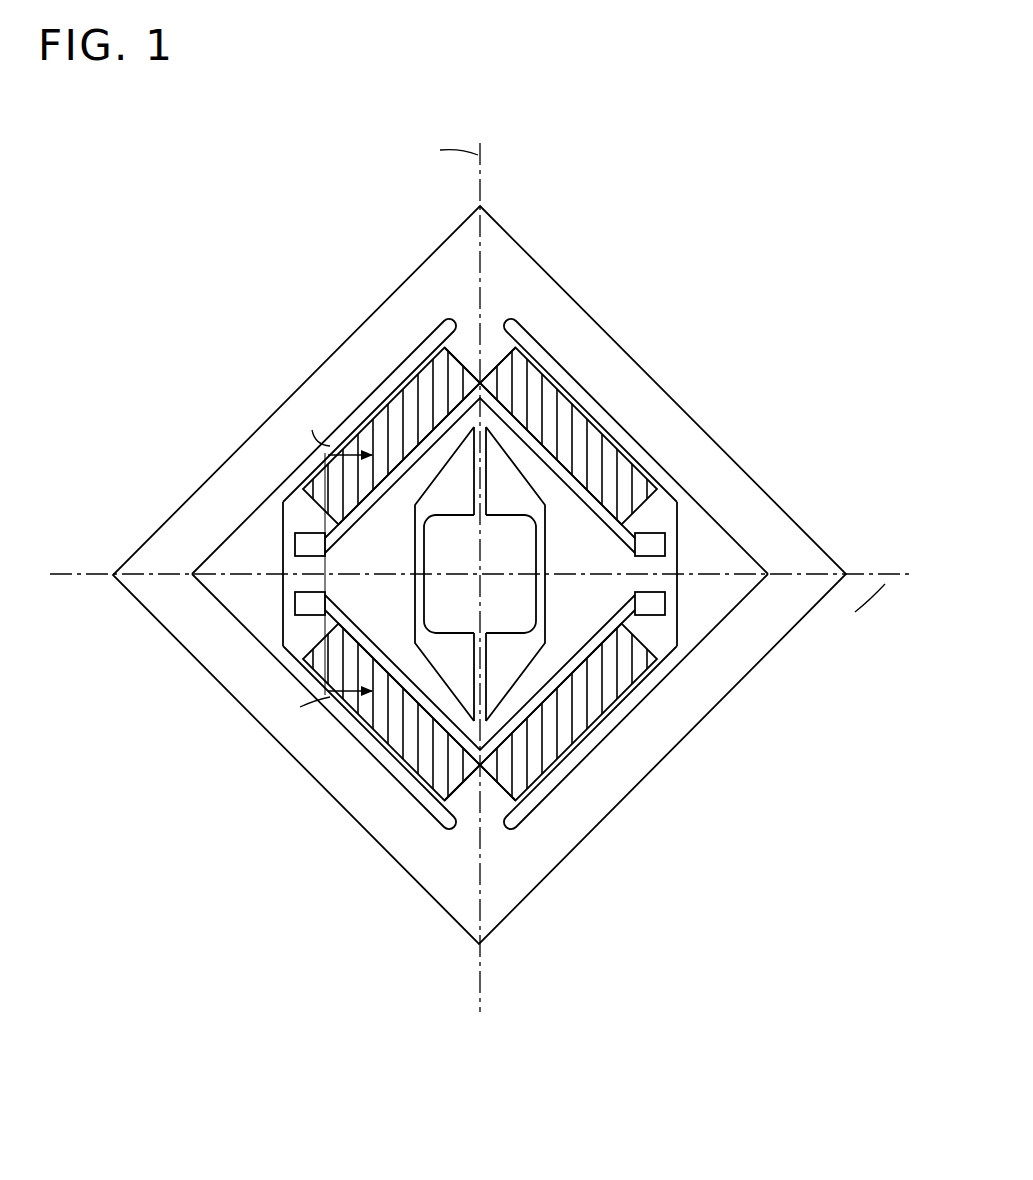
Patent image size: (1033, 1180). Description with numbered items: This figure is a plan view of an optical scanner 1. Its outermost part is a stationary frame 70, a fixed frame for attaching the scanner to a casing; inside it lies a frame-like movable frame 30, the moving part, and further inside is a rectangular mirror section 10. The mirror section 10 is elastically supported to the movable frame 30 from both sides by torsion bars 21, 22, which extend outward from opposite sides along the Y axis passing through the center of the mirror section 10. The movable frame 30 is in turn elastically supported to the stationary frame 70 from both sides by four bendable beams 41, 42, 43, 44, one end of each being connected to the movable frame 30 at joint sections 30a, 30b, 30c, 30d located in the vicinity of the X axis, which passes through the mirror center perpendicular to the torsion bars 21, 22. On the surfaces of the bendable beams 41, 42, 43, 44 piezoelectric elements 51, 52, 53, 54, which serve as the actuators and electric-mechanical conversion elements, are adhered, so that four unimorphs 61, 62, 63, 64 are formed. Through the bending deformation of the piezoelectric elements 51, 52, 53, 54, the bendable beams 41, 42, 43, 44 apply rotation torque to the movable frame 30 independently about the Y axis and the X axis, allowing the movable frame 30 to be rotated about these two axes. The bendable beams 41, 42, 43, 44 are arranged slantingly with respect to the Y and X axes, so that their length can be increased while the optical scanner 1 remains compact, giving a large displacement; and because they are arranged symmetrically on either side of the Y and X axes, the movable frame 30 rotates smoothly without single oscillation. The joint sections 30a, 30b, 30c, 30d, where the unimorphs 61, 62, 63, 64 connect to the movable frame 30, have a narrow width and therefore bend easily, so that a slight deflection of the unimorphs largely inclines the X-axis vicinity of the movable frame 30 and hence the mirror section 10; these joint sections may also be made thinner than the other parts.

The optical scanner 1 is at (582, 160).
The mirror section 10 is at (507, 538).
The torsion bar 21 is at (490, 432).
The torsion bar 22 is at (490, 700).
The movable frame 30 is at (461, 556).
The joint section 30a is at (315, 546).
The joint section 30b is at (316, 602).
The joint section 30c is at (668, 532).
The joint section 30d is at (668, 618).
The bendable beam 41 is at (305, 492).
The bendable beam 42 is at (302, 652).
The bendable beam 43 is at (598, 470).
The bendable beam 44 is at (658, 636).
The piezoelectric element 51 is at (402, 415).
The piezoelectric element 52 is at (402, 732).
The piezoelectric element 53 is at (605, 412).
The piezoelectric element 54 is at (600, 684).
The unimorph 61 is at (238, 288).
The unimorph 62 is at (200, 812).
The unimorph 63 is at (862, 442).
The unimorph 64 is at (832, 712).
The stationary frame 70 is at (157, 556).